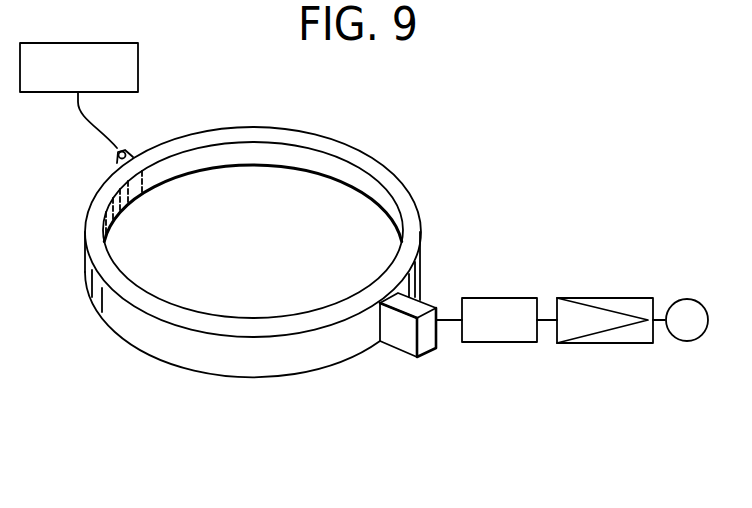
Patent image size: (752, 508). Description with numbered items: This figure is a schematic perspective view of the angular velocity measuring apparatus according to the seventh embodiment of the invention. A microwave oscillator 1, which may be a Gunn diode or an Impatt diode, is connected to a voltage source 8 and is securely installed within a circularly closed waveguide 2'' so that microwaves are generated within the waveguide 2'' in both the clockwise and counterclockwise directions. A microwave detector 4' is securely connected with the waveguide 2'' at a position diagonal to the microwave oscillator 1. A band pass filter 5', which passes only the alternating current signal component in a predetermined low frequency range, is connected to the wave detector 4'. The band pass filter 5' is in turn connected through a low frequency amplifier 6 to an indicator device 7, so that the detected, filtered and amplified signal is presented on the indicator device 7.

The microwave oscillator 1 is at (132, 196).
The circularly closed waveguide 2'' is at (253, 236).
The microwave detector 4' is at (421, 355).
The band pass filter 5' is at (509, 286).
The low frequency amplifier 6 is at (600, 298).
The indicator device 7 is at (687, 299).
The voltage source 8 is at (43, 92).